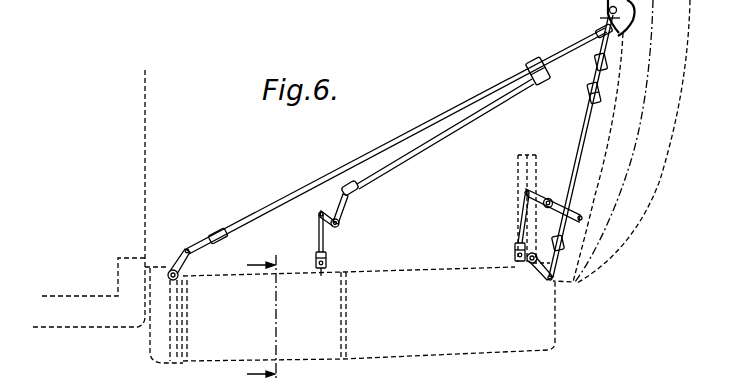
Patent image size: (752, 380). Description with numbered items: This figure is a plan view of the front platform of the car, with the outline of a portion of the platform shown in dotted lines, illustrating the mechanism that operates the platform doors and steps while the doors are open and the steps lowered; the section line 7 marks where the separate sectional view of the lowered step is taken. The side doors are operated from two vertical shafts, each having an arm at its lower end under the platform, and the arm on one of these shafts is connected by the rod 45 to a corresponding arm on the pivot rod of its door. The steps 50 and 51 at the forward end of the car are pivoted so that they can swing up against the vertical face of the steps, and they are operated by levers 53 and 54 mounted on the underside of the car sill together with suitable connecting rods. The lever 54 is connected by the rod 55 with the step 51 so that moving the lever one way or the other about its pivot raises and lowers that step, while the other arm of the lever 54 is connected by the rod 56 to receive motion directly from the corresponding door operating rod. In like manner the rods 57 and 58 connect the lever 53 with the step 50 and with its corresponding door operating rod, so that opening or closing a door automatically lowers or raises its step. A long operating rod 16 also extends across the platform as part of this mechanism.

The section line 7— 7 is at (263, 301).
The operating rod 16 is at (379, 149).
The rod 45 is at (580, 142).
The step 50 is at (449, 313).
The step 51 is at (264, 316).
The lever 53 is at (549, 198).
The lever 54 is at (342, 215).
The rod 55 is at (324, 237).
The rod 56 is at (433, 144).
The rod 57 is at (520, 225).
The rod 58 is at (581, 168).